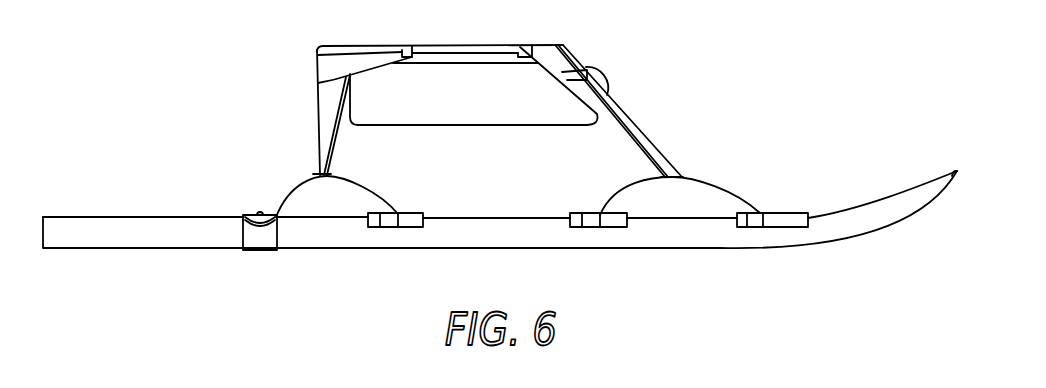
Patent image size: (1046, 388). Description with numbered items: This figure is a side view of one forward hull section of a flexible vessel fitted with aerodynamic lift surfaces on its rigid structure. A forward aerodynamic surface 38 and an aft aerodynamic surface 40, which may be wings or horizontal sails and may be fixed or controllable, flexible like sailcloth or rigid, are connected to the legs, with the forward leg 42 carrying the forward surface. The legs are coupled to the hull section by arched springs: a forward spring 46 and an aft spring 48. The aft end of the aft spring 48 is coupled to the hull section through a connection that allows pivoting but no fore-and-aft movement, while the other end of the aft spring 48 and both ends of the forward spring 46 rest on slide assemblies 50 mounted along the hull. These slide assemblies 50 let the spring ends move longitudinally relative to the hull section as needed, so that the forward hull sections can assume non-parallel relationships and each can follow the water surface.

The forward aerodynamic surface 38 is at (622, 133).
The aft aerodynamic surface 40 is at (322, 97).
The forward leg 42 is at (610, 93).
The forward spring 46 is at (742, 190).
The aft spring 48 is at (293, 190).
The slide assembly 50 is at (409, 213).